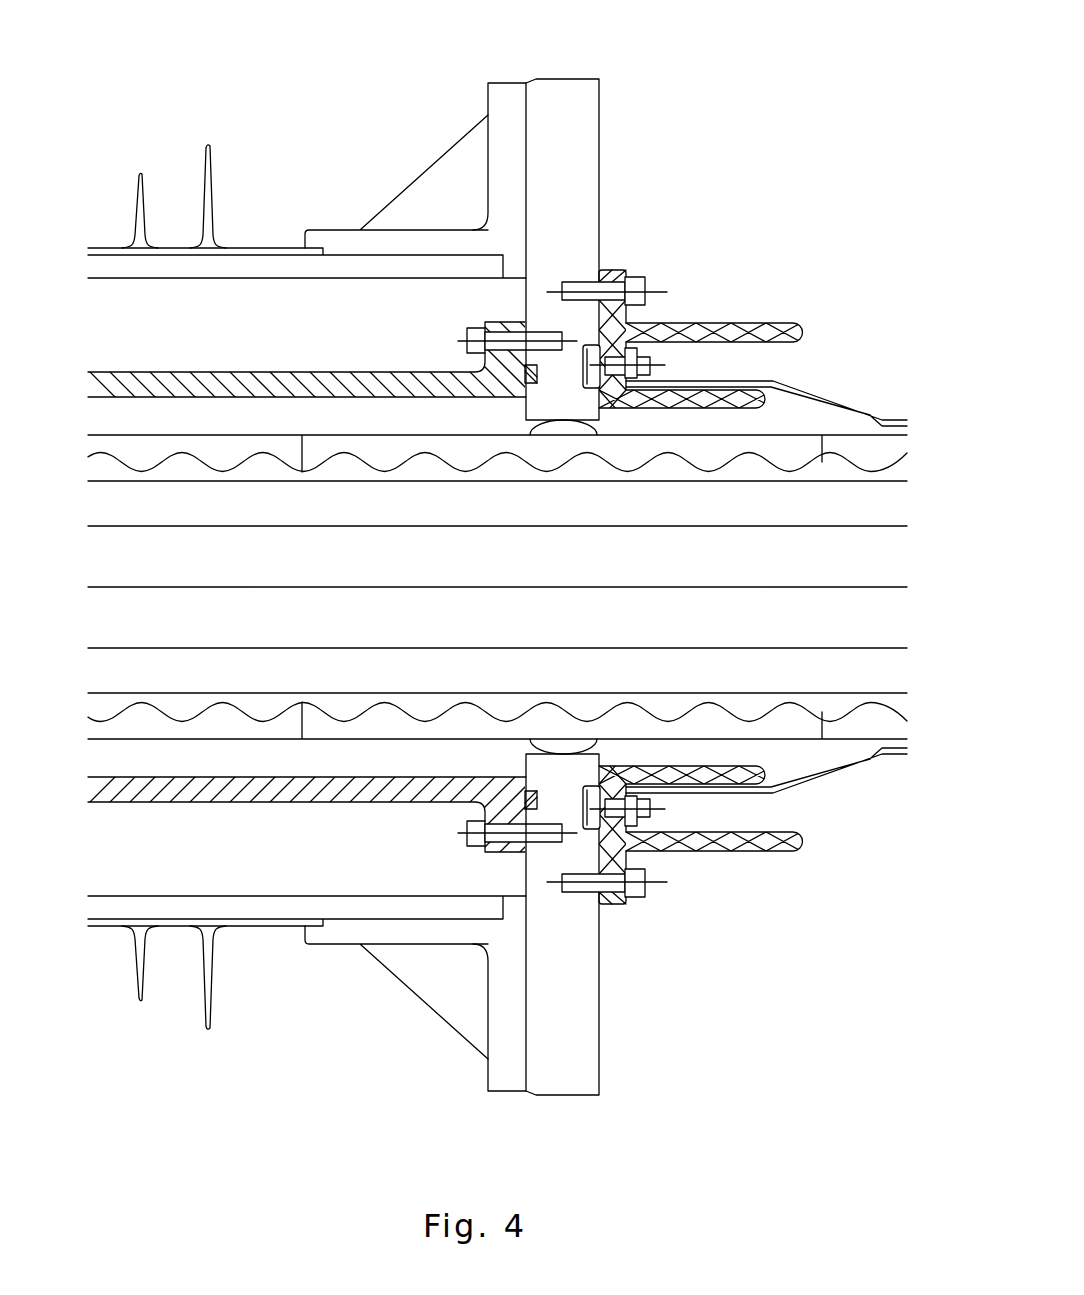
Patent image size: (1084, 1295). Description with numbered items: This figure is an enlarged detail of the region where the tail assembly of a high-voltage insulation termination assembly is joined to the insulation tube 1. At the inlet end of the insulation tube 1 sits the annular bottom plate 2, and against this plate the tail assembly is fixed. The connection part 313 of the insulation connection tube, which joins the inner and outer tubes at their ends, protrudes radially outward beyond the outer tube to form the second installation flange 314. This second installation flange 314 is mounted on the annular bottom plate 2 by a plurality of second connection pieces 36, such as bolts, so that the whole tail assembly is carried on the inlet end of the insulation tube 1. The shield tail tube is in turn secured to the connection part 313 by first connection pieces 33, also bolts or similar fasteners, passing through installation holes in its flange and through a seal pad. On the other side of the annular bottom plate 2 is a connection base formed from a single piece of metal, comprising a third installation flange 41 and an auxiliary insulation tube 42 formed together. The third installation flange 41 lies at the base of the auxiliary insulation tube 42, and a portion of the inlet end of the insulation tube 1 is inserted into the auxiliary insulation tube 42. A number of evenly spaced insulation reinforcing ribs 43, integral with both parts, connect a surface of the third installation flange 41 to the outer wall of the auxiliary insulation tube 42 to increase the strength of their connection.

The insulation tube 1 is at (255, 252).
The annular bottom plate 2 is at (568, 1058).
The first connection piece 33 is at (630, 362).
The second connection piece 36 is at (623, 292).
The third installation flange 41 is at (503, 107).
The auxiliary insulation tube 42 is at (348, 245).
The insulation reinforcing rib 43 is at (412, 975).
The connection part 313 is at (630, 830).
The second installation flange 314 is at (612, 275).